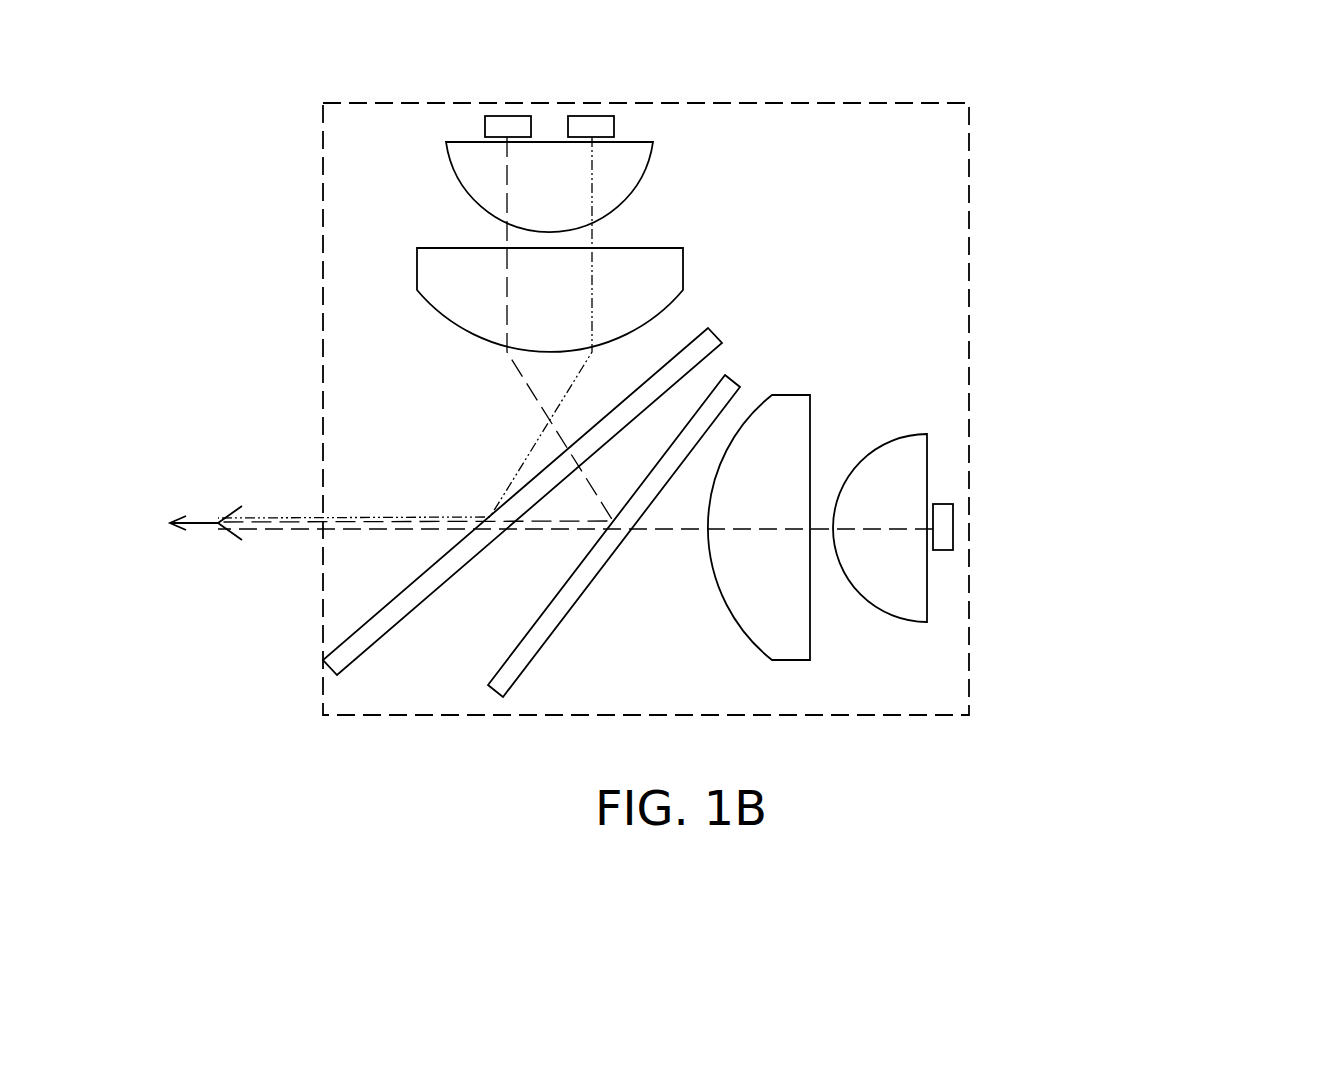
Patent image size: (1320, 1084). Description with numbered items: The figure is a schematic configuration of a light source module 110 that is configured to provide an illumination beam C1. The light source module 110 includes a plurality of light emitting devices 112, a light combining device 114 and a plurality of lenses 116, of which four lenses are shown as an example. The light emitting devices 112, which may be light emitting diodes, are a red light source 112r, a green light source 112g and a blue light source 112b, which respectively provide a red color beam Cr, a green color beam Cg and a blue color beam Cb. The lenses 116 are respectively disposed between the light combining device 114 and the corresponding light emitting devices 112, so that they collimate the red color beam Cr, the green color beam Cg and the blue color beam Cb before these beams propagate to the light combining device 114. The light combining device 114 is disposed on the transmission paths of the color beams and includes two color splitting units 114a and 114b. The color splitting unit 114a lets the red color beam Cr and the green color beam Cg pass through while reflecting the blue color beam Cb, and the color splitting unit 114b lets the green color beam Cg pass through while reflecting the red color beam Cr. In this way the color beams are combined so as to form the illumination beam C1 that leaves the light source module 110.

The light source module 110 is at (969, 252).
The light emitting devices 112 is at (881, 366).
The red light source 112r is at (507, 116).
The blue light source 112b is at (591, 116).
The green light source 112g is at (953, 513).
The light combining device 114 is at (615, 453).
The color splitting unit 114a is at (707, 338).
The color splitting unit 114b is at (733, 390).
The lenses 116 is at (466, 178).
The red color beam Cr is at (505, 230).
The blue color beam Cb is at (595, 230).
The green color beam Cg is at (818, 533).
The illumination beam C1 is at (202, 522).